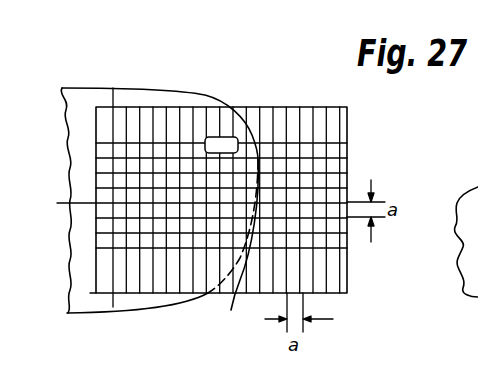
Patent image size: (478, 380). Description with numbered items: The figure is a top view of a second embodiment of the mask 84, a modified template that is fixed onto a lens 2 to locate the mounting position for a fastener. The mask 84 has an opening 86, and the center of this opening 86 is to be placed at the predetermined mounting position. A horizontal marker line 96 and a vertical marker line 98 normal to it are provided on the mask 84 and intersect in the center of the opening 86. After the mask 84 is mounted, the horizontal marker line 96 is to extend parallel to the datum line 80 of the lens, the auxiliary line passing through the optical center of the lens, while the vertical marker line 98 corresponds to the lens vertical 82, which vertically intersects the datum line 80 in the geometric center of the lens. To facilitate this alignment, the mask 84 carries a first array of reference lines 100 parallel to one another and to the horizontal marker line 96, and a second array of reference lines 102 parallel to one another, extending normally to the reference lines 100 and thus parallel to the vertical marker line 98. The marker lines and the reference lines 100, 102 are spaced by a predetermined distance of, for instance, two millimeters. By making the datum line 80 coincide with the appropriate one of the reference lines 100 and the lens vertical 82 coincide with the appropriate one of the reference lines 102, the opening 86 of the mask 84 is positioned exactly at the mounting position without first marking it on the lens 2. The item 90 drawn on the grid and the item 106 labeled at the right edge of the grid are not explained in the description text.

The lens 2 is at (72, 275).
The datum line 80 is at (72, 221).
The lens vertical 82 is at (122, 94).
The mask 84 is at (321, 284).
The opening 86 is at (238, 143).
The fastening element 90 is at (216, 130).
The horizontal marker line 96 is at (322, 144).
The vertical marker line 98 is at (231, 310).
The reference lines 100 is at (334, 231).
The reference lines 102 is at (288, 113).
The grid bar spacing 106 is at (347, 171).